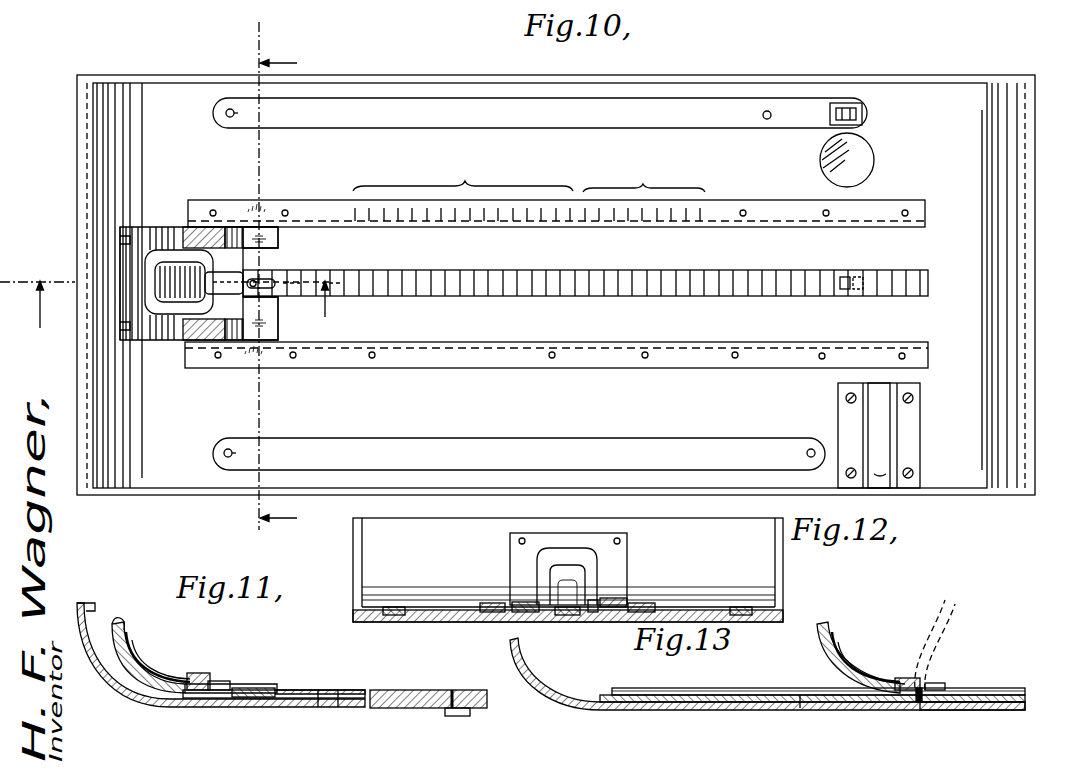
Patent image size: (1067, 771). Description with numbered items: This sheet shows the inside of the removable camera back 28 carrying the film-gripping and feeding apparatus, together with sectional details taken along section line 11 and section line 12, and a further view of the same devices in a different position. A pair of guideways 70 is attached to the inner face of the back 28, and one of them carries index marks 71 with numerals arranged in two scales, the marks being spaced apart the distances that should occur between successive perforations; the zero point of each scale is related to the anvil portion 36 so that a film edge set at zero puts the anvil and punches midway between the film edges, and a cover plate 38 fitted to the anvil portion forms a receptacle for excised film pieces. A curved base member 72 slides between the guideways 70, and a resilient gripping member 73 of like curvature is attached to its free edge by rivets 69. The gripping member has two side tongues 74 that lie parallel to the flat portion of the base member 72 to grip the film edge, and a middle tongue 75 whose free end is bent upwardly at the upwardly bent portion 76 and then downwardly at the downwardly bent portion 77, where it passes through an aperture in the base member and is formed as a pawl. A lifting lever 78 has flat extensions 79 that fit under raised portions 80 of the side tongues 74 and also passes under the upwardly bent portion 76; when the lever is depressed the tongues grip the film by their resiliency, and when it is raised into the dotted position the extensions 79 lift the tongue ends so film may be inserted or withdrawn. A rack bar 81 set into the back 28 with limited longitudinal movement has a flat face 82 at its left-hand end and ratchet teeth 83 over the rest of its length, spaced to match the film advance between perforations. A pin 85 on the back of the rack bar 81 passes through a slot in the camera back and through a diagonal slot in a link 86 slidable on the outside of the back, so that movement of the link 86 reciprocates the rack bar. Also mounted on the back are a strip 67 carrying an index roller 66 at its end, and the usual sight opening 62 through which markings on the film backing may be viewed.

In FIG. 10, the section line 11— 11 is at (174, 304).
In FIG. 10, the section line 12— 12 is at (278, 276).
In FIG. 10, the base board 28 is at (147, 466).
In FIG. 11, the base board 28 is at (102, 676).
In FIG. 12, the base board 28 is at (352, 566).
In FIG. 13, the base board 28 is at (550, 688).
In FIG. 10, the anvil portion 36 is at (897, 393).
In FIG. 10, the cover plate 38 is at (880, 425).
In FIG. 10, the sight opening 62 is at (868, 158).
In FIG. 10, the roller 66 is at (862, 113).
In FIG. 10, the strip 67 is at (639, 122).
In FIG. 12, the strip 67 is at (395, 606).
In FIG. 10, the rivets 69 is at (122, 334).
In FIG. 11, the rivets 69 is at (121, 626).
In FIG. 12, the rivets 69 is at (518, 540).
In FIG. 10, the guideways 70 is at (323, 200).
In FIG. 12, the guideways 70 is at (490, 602).
In FIG. 13, the guideways 70 is at (653, 689).
In FIG. 10, the index marks 71 is at (382, 207).
In FIG. 10, the base member 72 is at (279, 240).
In FIG. 11, the base member 72 is at (130, 690).
In FIG. 12, the base member 72 is at (524, 612).
In FIG. 13, the base member 72 is at (820, 641).
In FIG. 10, the resilient gripping member 73 is at (147, 226).
In FIG. 10, the side tongues 74 is at (226, 235).
In FIG. 11, the side tongues 74 is at (234, 690).
In FIG. 12, the side tongues 74 is at (625, 598).
In FIG. 13, the side tongues 74 is at (942, 683).
In FIG. 10, the middle tongue 75 is at (177, 287).
In FIG. 11, the middle tongue 75 is at (150, 670).
In FIG. 13, the middle tongue 75 is at (853, 666).
In FIG. 10, the upwardly bent portion 76 is at (232, 268).
In FIG. 11, the upwardly bent portion 76 is at (198, 675).
In FIG. 13, the upwardly bent portion 76 is at (905, 678).
In FIG. 11, the downwardly bent portion 77 is at (216, 683).
In FIG. 13, the downwardly bent portion 77 is at (919, 703).
In FIG. 10, the lifting lever 78 is at (172, 260).
In FIG. 11, the lifting lever 78 is at (141, 658).
In FIG. 12, the lifting lever 78 is at (600, 565).
In FIG. 13, the lifting lever 78 is at (836, 656).
In FIG. 10, the extensions 79 is at (212, 310).
In FIG. 12, the extensions 79 is at (594, 612).
In FIG. 10, the raised portions 80 is at (203, 230).
In FIG. 10, the rack bar 81 is at (543, 293).
In FIG. 11, the rack bar 81 is at (395, 710).
In FIG. 12, the rack bar 81 is at (566, 615).
In FIG. 13, the rack bar 81 is at (838, 708).
In FIG. 10, the flat face 82 is at (285, 272).
In FIG. 11, the flat face 82 is at (250, 700).
In FIG. 13, the flat face 82 is at (680, 704).
In FIG. 11, the ratchet teeth 83 is at (337, 704).
In FIG. 13, the ratchet teeth 83 is at (800, 708).
In FIG. 10, the pin 85 is at (851, 277).
In FIG. 11, the pin 85 is at (456, 692).
In FIG. 11, the link 86 is at (462, 717).